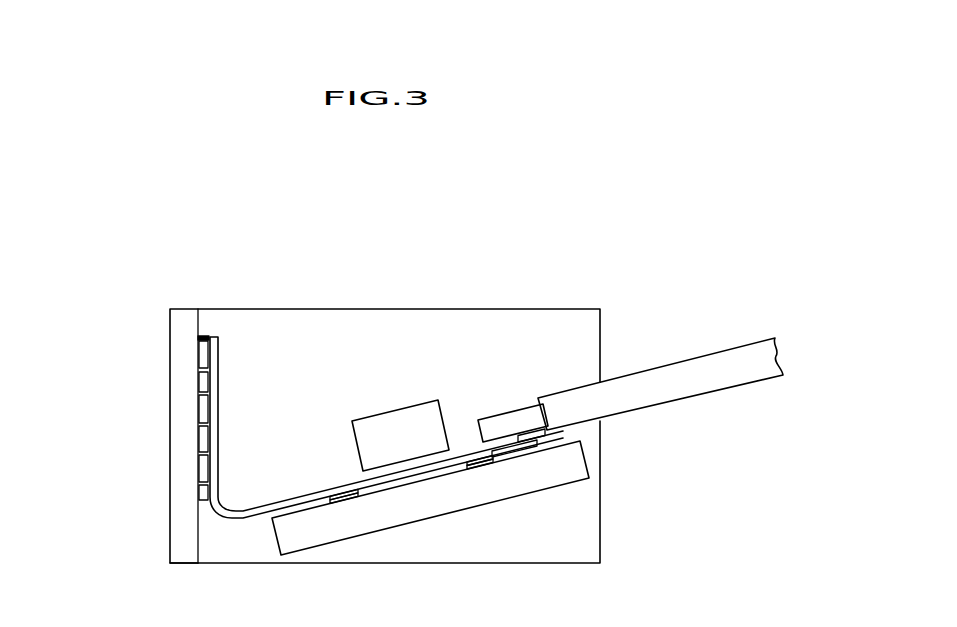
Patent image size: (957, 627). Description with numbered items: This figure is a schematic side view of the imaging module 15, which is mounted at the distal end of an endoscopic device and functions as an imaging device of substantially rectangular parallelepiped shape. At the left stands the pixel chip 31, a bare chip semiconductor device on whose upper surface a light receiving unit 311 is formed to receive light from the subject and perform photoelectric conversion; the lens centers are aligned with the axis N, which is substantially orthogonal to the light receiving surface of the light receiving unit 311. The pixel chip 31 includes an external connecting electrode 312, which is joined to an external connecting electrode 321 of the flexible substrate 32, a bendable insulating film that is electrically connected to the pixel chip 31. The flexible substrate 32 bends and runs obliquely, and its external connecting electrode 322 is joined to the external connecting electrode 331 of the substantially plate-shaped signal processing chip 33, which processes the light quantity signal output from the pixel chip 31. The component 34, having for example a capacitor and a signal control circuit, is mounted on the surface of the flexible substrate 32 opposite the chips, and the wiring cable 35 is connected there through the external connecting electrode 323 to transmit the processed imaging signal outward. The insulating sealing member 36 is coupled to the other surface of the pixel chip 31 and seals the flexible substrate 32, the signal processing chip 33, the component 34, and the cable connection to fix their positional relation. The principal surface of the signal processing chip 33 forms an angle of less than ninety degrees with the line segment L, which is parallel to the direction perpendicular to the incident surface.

The imaging module 15 is at (553, 228).
The pixel chip 31 is at (181, 489).
The light receiving unit 311 is at (150, 527).
The external connecting electrode 312 is at (200, 350).
The flexible substrate 32 is at (219, 346).
The external connecting electrode 321 is at (205, 335).
The external connecting electrode 322 is at (340, 496).
The external connecting electrode 323 is at (521, 432).
The signal processing chip 33 is at (410, 513).
The external connecting electrode 331 is at (362, 504).
The component 34 is at (389, 424).
The wiring cable 35 is at (682, 374).
The insulating sealing member 36 is at (603, 521).
The axis N is at (126, 438).
The line segment L is at (317, 518).